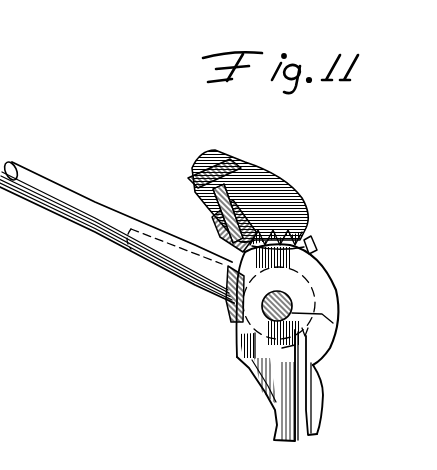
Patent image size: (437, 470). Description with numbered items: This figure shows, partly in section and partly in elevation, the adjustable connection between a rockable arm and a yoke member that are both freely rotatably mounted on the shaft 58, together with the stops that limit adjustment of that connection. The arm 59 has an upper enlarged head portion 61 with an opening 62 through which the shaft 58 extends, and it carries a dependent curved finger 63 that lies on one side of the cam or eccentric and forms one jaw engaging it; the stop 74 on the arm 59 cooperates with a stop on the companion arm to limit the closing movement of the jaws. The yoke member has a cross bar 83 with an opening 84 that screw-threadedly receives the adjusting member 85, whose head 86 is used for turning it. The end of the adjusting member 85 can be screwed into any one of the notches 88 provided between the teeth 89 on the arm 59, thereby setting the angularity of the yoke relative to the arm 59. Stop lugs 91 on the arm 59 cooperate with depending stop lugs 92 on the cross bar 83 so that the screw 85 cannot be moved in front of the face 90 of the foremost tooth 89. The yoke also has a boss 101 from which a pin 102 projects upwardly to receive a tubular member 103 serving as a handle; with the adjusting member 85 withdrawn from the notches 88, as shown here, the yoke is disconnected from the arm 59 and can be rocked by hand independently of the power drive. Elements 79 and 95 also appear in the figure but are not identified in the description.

The shaft 58 is at (292, 298).
The rockable arm member 59 is at (320, 395).
The upper enlarged head portion 61 is at (320, 304).
The opening 62 is at (333, 323).
The dependent curved finger 63 is at (312, 411).
The stop 74 is at (298, 331).
The projection 79 is at (237, 334).
The cross bar 83 is at (262, 215).
The opening 84 is at (214, 222).
The screw-threaded adjusting member 85 is at (250, 170).
The head 86 is at (229, 160).
The grooves or notches 88 is at (287, 240).
The ribs or teeth 89 is at (320, 248).
The face of foremost tooth 90 is at (270, 230).
The stop lugs 91 is at (211, 283).
The depending stop lugs 92 is at (227, 248).
The pawl surface 95 is at (254, 206).
The enlargement or boss 101 is at (221, 318).
The rod or pin 102 is at (130, 250).
The tubular member 103 is at (59, 192).